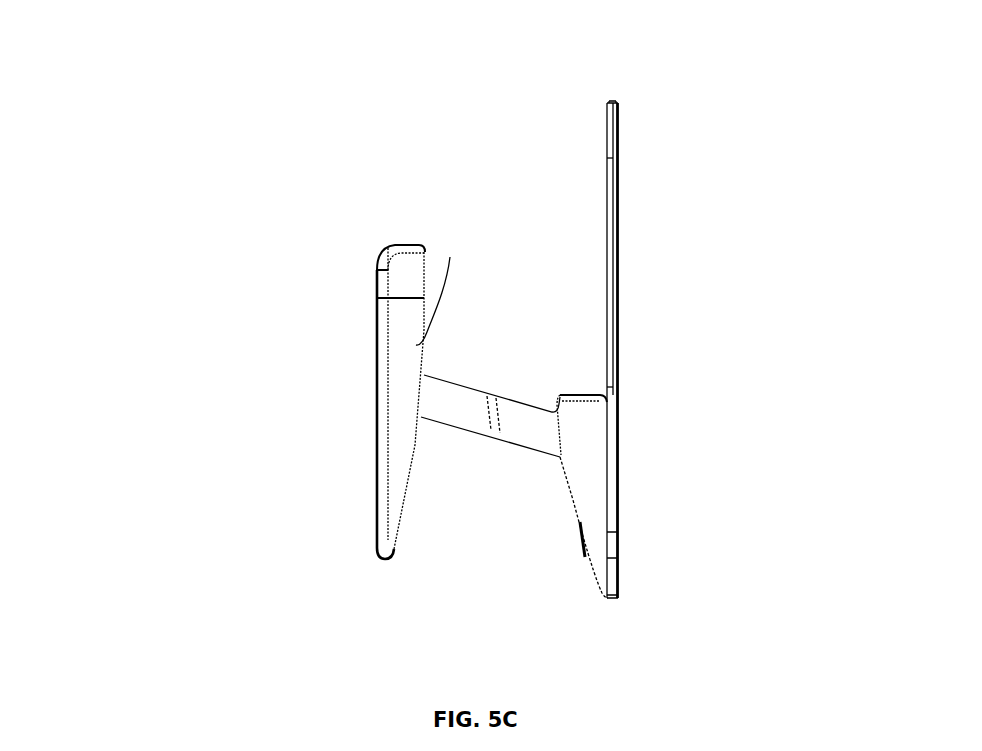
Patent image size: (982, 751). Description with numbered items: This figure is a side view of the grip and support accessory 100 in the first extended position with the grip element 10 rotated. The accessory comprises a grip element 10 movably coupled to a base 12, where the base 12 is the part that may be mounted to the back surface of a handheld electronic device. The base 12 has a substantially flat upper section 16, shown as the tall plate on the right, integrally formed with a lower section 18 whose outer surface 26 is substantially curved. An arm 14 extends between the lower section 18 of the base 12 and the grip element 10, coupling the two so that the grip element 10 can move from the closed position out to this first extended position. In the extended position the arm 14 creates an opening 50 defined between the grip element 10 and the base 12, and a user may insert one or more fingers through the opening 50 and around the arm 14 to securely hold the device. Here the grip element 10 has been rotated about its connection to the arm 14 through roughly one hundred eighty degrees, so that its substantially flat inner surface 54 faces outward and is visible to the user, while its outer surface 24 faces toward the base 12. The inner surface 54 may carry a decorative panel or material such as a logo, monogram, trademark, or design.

The grip and support accessory 100 is at (148, 249).
The grip element 10 is at (338, 308).
The inner surface 54 is at (376, 402).
The outer surface 24 is at (446, 281).
The opening 50 is at (498, 178).
The arm 14 is at (458, 423).
The base 12 is at (685, 353).
The upper section 16 is at (604, 271).
The lower section 18 is at (568, 508).
The outer surface 26 is at (590, 528).